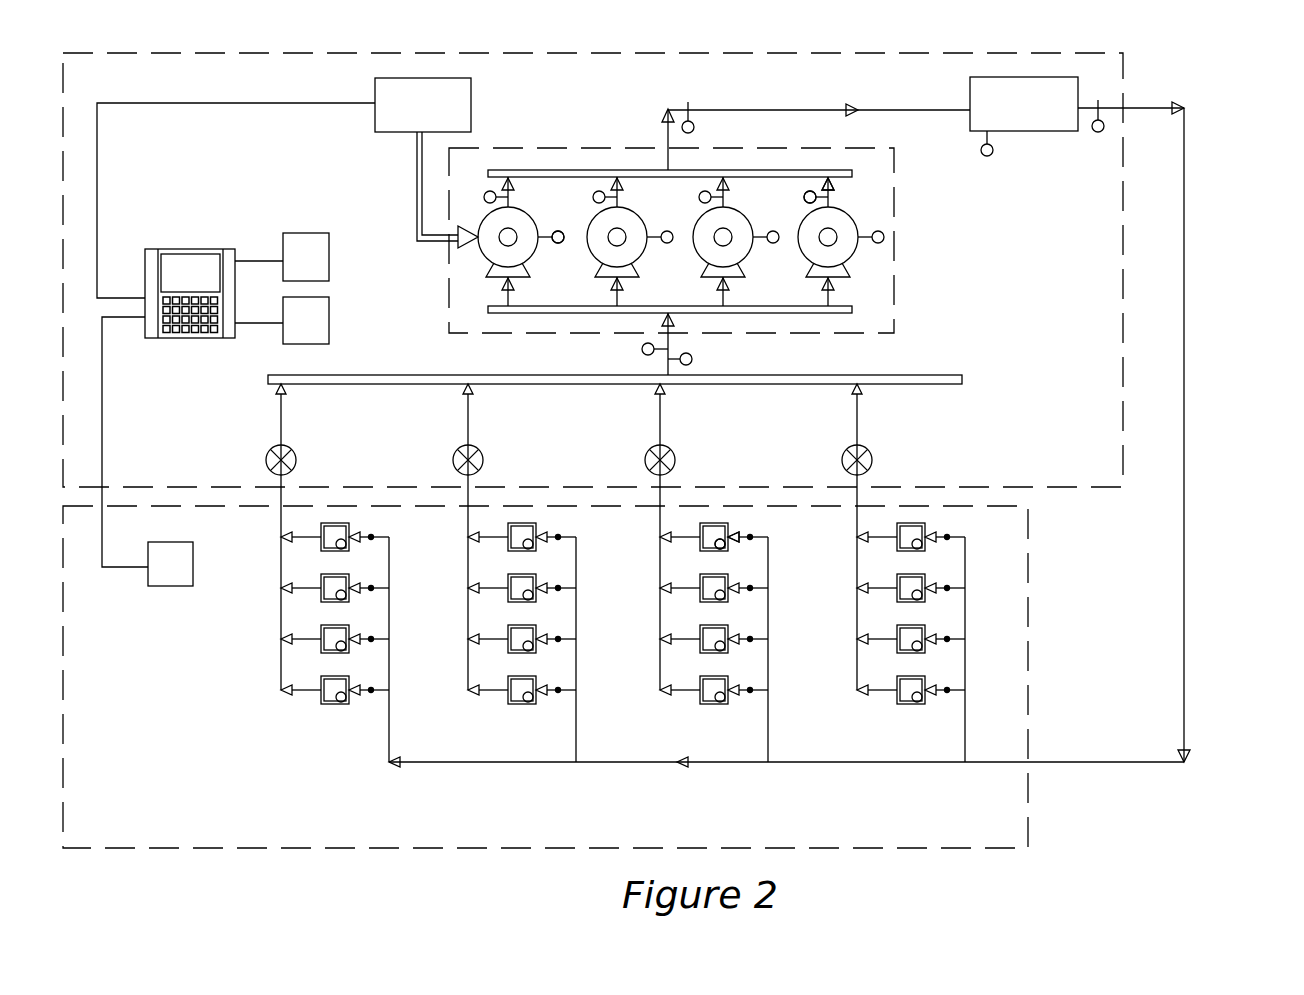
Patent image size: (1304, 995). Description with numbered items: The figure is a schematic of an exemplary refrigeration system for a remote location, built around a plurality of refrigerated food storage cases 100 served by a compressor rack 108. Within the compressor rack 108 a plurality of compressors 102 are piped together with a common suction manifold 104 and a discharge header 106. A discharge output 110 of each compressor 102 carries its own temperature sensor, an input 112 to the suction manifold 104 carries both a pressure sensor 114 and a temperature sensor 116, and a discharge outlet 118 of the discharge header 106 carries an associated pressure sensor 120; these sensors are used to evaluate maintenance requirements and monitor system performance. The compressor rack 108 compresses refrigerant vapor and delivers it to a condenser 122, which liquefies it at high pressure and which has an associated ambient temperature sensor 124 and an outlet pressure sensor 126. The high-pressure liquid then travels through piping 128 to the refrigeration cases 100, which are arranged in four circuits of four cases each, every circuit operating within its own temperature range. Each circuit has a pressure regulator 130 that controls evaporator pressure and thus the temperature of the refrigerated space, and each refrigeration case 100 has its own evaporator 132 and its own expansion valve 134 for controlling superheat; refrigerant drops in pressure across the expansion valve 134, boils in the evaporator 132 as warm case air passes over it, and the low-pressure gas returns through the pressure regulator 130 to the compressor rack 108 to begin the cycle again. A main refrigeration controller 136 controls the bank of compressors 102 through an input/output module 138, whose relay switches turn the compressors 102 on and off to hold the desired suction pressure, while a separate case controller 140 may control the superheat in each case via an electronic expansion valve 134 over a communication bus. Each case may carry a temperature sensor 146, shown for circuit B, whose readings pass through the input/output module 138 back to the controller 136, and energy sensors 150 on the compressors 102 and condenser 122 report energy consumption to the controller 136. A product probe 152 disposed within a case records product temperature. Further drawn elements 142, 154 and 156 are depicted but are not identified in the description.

The refrigeration case 100 is at (1207, 138).
The compressor 102 is at (339, 523).
The common suction manifold 104 is at (858, 215).
The discharge header 106 is at (852, 310).
The compressor rack 108 is at (570, 172).
The discharge output 110 is at (894, 335).
The input 112 is at (832, 200).
The pressure sensor 114 is at (803, 197).
The temperature sensor 116 is at (672, 318).
The discharge outlet 118 is at (641, 350).
The pressure sensor 120 is at (692, 359).
The condenser 122 is at (662, 106).
The ambient temperature sensor 124 is at (694, 128).
The outlet pressure sensor 126 is at (1032, 131).
The piping 128 is at (987, 156).
The pressure regulator 130 is at (1098, 132).
The evaporator 132 is at (1184, 362).
The expansion valve 134 is at (295, 457).
The main refrigeration controller 136 is at (722, 549).
The input/output module 138 is at (748, 535).
The case controller 140 is at (190, 338).
The I/O board 142 is at (472, 103).
The temperature sensor 146 is at (520, 551).
The energy sensor 150 is at (558, 245).
The product probe 152 is at (193, 560).
The memory 154 is at (329, 323).
The processor 156 is at (329, 243).